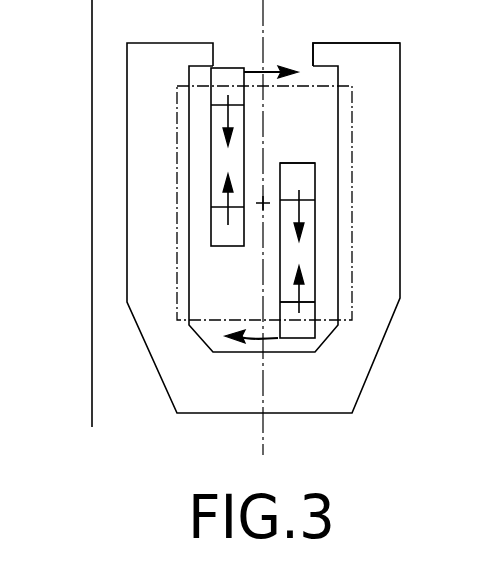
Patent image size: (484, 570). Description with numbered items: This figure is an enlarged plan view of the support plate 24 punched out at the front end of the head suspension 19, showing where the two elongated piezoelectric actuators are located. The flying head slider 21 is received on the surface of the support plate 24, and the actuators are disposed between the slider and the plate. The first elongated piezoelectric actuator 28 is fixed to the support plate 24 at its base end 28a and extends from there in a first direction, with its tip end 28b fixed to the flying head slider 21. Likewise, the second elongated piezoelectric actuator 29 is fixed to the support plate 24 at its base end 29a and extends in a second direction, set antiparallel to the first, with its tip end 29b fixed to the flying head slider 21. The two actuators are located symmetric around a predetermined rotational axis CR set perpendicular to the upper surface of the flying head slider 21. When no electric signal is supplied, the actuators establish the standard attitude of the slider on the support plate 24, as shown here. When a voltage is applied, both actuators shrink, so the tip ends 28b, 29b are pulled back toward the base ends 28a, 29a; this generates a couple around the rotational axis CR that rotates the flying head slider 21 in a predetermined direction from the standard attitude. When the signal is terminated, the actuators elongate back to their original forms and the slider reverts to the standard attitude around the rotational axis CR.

The head suspension 19 is at (93, 130).
The flying head slider 21 is at (221, 322).
The support plate 24 is at (335, 75).
The first elongated piezoelectric actuator 28 is at (210, 182).
The base end 28a is at (230, 67).
The tip end 28b is at (220, 232).
The second elongated piezoelectric actuator 29 is at (316, 228).
The base end 29a is at (300, 327).
The tip end 29b is at (295, 163).
The rotational axis CR is at (262, 206).